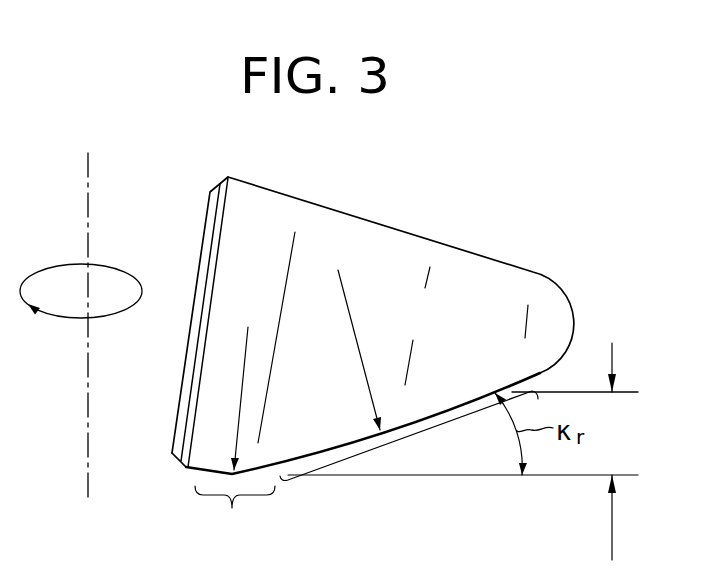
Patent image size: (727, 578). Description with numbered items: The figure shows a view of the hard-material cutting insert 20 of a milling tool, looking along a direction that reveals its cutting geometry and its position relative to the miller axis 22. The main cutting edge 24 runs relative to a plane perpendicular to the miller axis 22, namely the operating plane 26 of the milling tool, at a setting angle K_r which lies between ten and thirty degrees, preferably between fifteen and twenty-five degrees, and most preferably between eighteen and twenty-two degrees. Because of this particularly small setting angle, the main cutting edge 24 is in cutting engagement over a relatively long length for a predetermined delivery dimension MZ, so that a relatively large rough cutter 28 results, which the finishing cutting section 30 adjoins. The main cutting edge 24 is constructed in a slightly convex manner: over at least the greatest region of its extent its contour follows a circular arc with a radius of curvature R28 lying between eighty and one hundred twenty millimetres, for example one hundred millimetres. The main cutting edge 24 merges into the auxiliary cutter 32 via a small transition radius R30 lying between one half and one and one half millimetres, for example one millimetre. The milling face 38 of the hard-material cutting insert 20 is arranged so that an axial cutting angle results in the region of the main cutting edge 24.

The hard-material cutting insert 20 is at (350, 192).
The miller axis 22 is at (88, 177).
The main cutting edge 24 is at (463, 407).
The operating plane 26 is at (558, 477).
The rough cutter 28 is at (397, 444).
The finishing cutting section 30 is at (235, 516).
The auxiliary cutter 32 is at (189, 469).
The milling face 38 is at (260, 213).
The radius of curvature R28 is at (353, 323).
The transition radius R30 is at (245, 360).
The predetermined dimension for delivery MZ is at (583, 451).